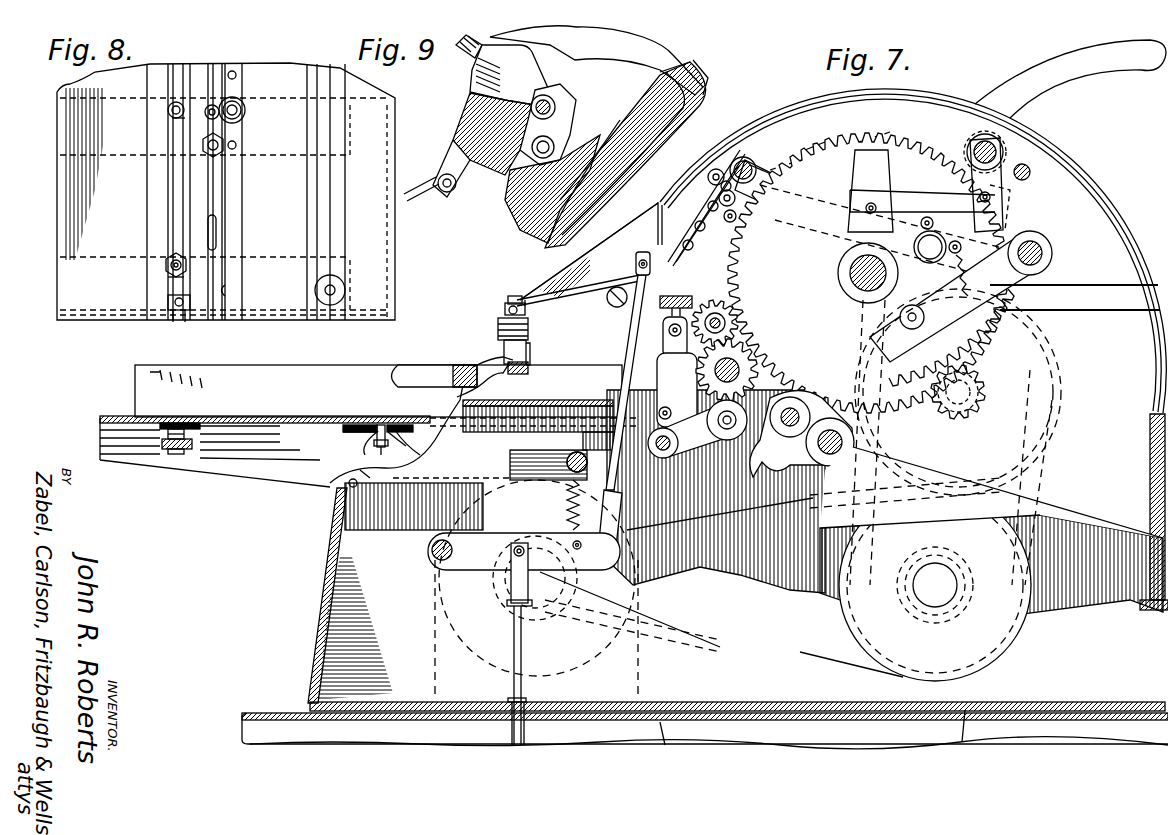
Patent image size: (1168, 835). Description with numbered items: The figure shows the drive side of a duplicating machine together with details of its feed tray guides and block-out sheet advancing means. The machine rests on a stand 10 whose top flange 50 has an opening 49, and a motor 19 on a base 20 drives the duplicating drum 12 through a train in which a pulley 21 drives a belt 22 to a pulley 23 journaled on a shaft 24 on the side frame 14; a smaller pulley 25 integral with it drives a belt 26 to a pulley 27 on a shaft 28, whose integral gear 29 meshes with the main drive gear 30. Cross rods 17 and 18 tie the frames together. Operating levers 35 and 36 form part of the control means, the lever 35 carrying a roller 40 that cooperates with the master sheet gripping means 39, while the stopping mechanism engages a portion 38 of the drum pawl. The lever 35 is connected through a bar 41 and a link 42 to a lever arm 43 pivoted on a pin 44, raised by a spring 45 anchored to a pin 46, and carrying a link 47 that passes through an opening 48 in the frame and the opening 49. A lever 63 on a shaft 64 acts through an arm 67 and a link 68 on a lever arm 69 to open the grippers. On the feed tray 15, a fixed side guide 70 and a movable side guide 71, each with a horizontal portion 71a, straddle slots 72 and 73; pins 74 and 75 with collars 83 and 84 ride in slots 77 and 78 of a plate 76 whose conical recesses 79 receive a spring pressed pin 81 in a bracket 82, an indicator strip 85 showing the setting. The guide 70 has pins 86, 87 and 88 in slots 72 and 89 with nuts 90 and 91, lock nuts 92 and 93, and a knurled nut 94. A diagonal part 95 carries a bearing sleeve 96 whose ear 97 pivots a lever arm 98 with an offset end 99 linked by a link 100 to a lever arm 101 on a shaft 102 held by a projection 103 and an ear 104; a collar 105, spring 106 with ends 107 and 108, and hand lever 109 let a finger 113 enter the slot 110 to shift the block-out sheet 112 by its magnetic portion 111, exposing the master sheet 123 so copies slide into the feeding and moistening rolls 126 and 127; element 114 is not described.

In FIG. 7, the stand 10 is at (1091, 740).
In FIG. 9, the duplicating drum 12 is at (600, 172).
In FIG. 7, the duplicating drum 12 is at (1010, 300).
In FIG. 7, the side frame 14 is at (965, 743).
In FIG. 9, the feed tray 15 is at (532, 251).
In FIG. 7, the feed tray 15 is at (106, 418).
In FIG. 7, the cross rod 17 is at (1030, 168).
In FIG. 9, the cross tie rod 18 is at (462, 52).
In FIG. 7, the cross tie rod 18 is at (746, 158).
In FIG. 7, the motor 19 is at (636, 583).
In FIG. 7, the base 20 is at (316, 650).
In FIG. 7, the pulley 21 is at (500, 600).
In FIG. 7, the belt 22 is at (585, 491).
In FIG. 7, the pulley 23 is at (850, 542).
In FIG. 7, the shaft 24 is at (937, 570).
In FIG. 7, the smaller pulley 25 is at (958, 608).
In FIG. 7, the belt 26 is at (1030, 472).
In FIG. 7, the pulley 27 is at (1060, 372).
In FIG. 7, the shaft 28 is at (985, 391).
In FIG. 7, the gear 29 is at (978, 410).
In FIG. 7, the main drive gear 30 is at (975, 352).
In FIG. 7, the operating lever 35 is at (775, 205).
In FIG. 7, the operating lever 36 is at (686, 243).
In FIG. 7, the portion of the pawl 38 is at (782, 152).
In FIG. 7, the master sheet gripping means 39 is at (810, 160).
In FIG. 7, the roller 40 is at (811, 237).
In FIG. 7, the bar 41 is at (690, 250).
In FIG. 7, the link 42 is at (626, 468).
In FIG. 7, the lever arm 43 is at (480, 550).
In FIG. 7, the pin 44 is at (432, 550).
In FIG. 7, the spring 45 is at (570, 512).
In FIG. 7, the pin 46 is at (567, 461).
In FIG. 7, the link 47 is at (514, 641).
In FIG. 7, the opening 48 is at (525, 700).
In FIG. 7, the opening 49 is at (512, 720).
In FIG. 7, the top flange 50 is at (665, 746).
In FIG. 7, the lever 63 is at (1045, 62).
In FIG. 7, the shaft 64 is at (993, 145).
In FIG. 7, the arm 67 is at (1000, 183).
In FIG. 7, the link 68 is at (946, 212).
In FIG. 7, the lever arm 69 is at (870, 175).
In FIG. 8, the side guide 70 is at (350, 283).
In FIG. 8, the movable side guide 71 is at (360, 108).
In FIG. 7, the movable side guide 71 is at (312, 375).
In FIG. 8, the horizontal portion 71a is at (290, 160).
In FIG. 7, the horizontal portion 71a is at (276, 416).
In FIG. 8, the slot 72 is at (175, 212).
In FIG. 7, the slot 72 is at (381, 424).
In FIG. 8, the slot 73 is at (220, 236).
In FIG. 8, the threaded pin 74 is at (168, 110).
In FIG. 8, the threaded pin 75 is at (208, 105).
In FIG. 8, the plate 76 is at (195, 187).
In FIG. 7, the plate 76 is at (350, 433).
In FIG. 8, the slot 77 is at (170, 228).
In FIG. 7, the slot 77 is at (405, 422).
In FIG. 8, the slot 78 is at (232, 291).
In FIG. 7, the slot 78 is at (345, 422).
In FIG. 8, the conical recesses 79 is at (237, 148).
In FIG. 8, the spring pressed pin 81 is at (245, 112).
In FIG. 8, the bracket 82 is at (240, 98).
In FIG. 8, the collar 83 is at (178, 122).
In FIG. 8, the collar 84 is at (236, 140).
In FIG. 7, the visual indicator strip 85 is at (172, 418).
In FIG. 8, the pin 86 is at (165, 263).
In FIG. 7, the pin 86 is at (382, 447).
In FIG. 8, the pin 87 is at (177, 316).
In FIG. 8, the pin 88 is at (322, 280).
In FIG. 7, the pin 88 is at (186, 420).
In FIG. 8, the slot 89 is at (325, 198).
In FIG. 7, the slot 89 is at (195, 441).
In FIG. 8, the nut 90 is at (160, 258).
In FIG. 7, the nut 90 is at (392, 440).
In FIG. 8, the nut 91 is at (168, 302).
In FIG. 8, the lock nut 92 is at (170, 275).
In FIG. 7, the lock nut 92 is at (386, 448).
In FIG. 8, the lock nut 93 is at (190, 312).
In FIG. 8, the knurled nut 94 is at (325, 297).
In FIG. 7, the knurled nut 94 is at (186, 452).
In FIG. 7, the upwardly and diagonally extending part 95 is at (552, 282).
In FIG. 9, the bearing sleeve 96 is at (480, 78).
In FIG. 9, the ear 97 is at (510, 118).
In FIG. 9, the lever arm 98 is at (523, 195).
In FIG. 9, the offset end 99 is at (497, 175).
In FIG. 9, the link 100 is at (424, 195).
In FIG. 7, the link 100 is at (540, 300).
In FIG. 7, the lever arm 101 is at (535, 310).
In FIG. 7, the shaft 102 is at (512, 298).
In FIG. 7, the projection 103 is at (505, 305).
In FIG. 7, the ear 104 is at (530, 357).
In FIG. 7, the collar 105 is at (527, 345).
In FIG. 7, the spring 106 is at (498, 328).
In FIG. 7, the spring end 107 is at (492, 348).
In FIG. 7, the spring end 108 is at (505, 311).
In FIG. 7, the hand lever 109 is at (428, 370).
In FIG. 9, the block-out sheet receiving slot 110 is at (628, 152).
In FIG. 9, the magnetically attractable portion 111 is at (632, 135).
In FIG. 9, the block-out sheet 112 is at (655, 52).
In FIG. 9, the finger 113 is at (597, 112).
In FIG. 7, the wall 114 is at (1104, 512).
In FIG. 9, the master sheet 123 is at (700, 100).
In FIG. 7, the feeding and moistening roll 126 is at (768, 349).
In FIG. 7, the feeding and moistening roll 127 is at (720, 470).